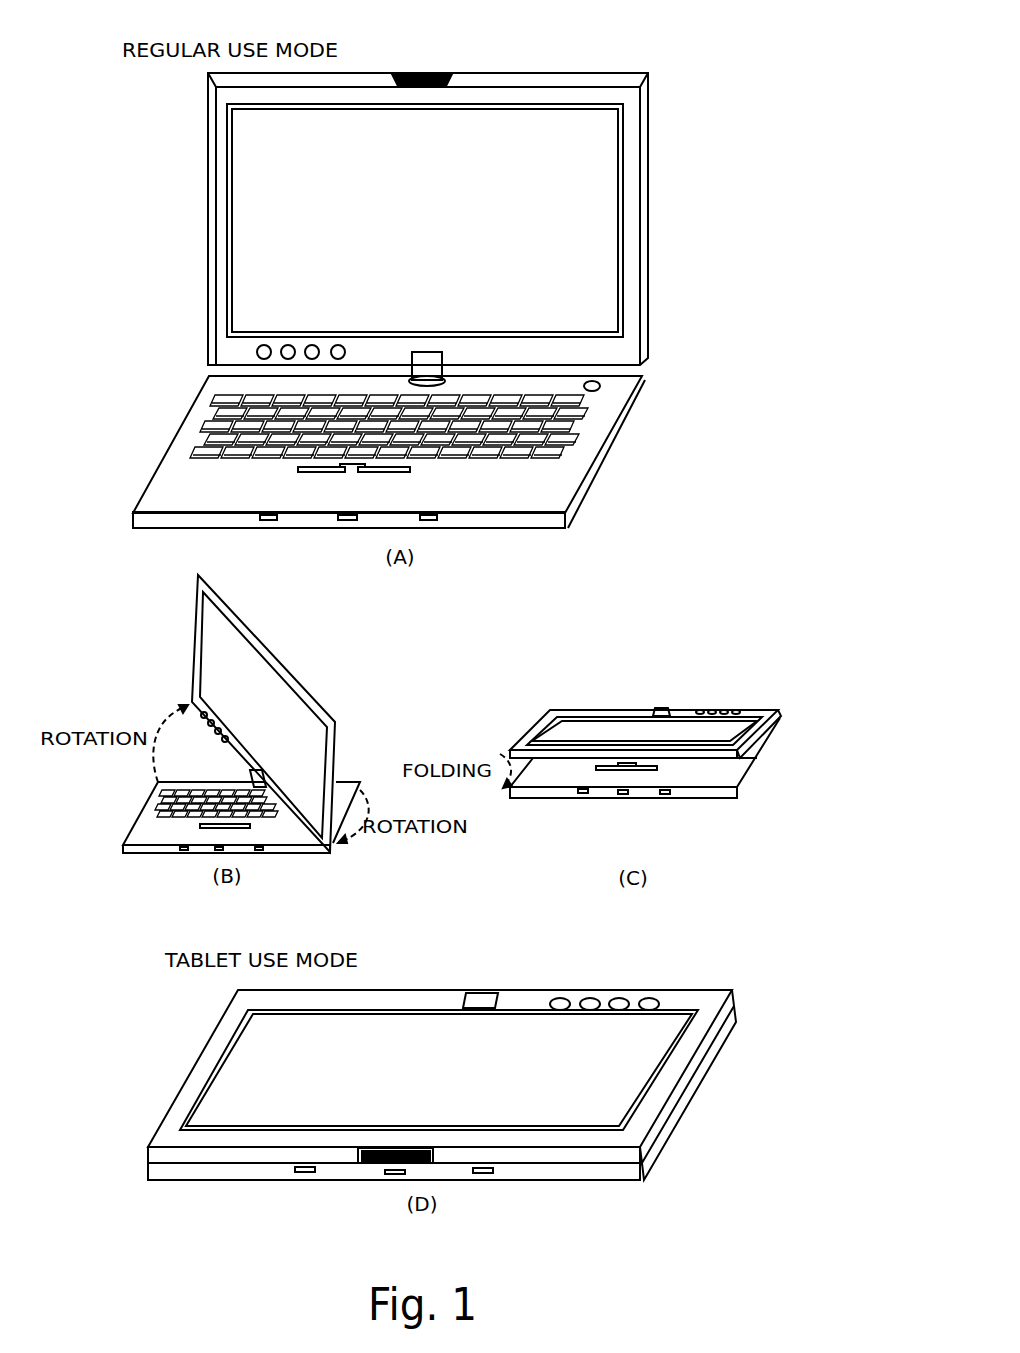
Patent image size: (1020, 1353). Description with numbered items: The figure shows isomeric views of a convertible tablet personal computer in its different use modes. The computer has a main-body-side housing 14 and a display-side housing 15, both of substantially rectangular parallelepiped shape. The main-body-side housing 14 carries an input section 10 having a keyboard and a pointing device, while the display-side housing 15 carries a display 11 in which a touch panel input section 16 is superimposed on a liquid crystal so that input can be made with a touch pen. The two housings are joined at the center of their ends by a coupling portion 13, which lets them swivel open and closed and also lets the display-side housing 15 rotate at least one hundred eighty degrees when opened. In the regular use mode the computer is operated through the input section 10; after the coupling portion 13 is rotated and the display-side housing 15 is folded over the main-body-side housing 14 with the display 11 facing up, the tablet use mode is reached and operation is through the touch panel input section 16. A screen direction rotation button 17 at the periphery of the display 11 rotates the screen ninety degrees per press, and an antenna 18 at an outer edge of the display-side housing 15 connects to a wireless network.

The input section 10 is at (592, 417).
The display 11 is at (628, 127).
The coupling portion 13 is at (440, 352).
The main-body-side housing 14 is at (577, 498).
The display-side housing 15 is at (650, 228).
The touch panel input section 16 is at (511, 115).
The screen direction rotation button 17 is at (255, 352).
The antenna 18 is at (445, 73).